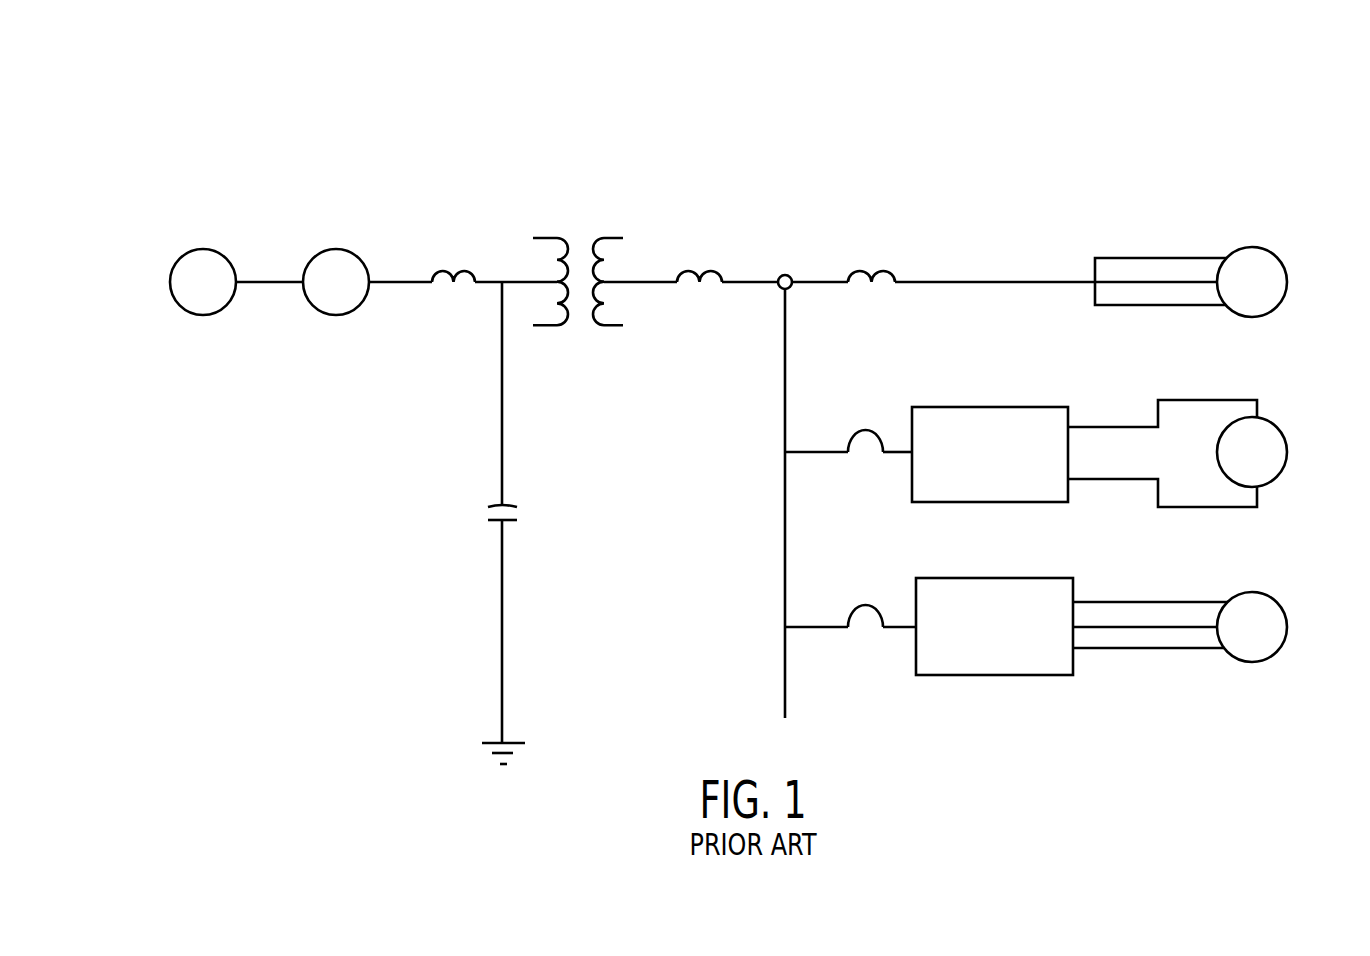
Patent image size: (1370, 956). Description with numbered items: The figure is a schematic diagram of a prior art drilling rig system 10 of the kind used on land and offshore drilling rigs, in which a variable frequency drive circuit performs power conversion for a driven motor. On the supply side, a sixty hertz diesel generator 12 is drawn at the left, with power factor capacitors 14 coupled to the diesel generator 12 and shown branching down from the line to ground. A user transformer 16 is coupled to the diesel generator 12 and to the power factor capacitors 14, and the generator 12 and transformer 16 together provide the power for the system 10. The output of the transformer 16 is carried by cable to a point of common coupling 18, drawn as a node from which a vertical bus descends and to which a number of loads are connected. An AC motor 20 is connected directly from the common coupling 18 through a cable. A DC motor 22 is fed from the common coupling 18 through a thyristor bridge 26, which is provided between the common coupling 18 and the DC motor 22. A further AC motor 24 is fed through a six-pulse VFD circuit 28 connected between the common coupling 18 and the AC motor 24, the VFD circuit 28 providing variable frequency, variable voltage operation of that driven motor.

The drilling rig system 10 is at (928, 89).
The 60 Hz diesel generator 12 is at (314, 311).
The power factor capacitors 14 is at (488, 509).
The user transformer 16 is at (577, 319).
The point of common coupling 18 is at (778, 287).
The AC motor 20 is at (1252, 248).
The DC motor 22 is at (1273, 422).
The AC motor 24 is at (1250, 592).
The thyristor bridge 26 is at (990, 407).
The six-pulse VFD circuit 28 is at (993, 578).